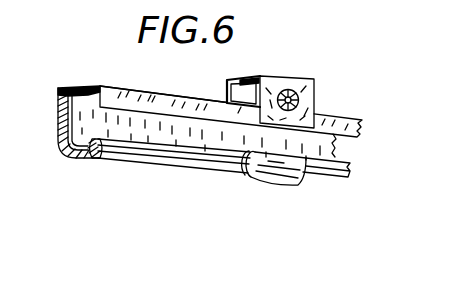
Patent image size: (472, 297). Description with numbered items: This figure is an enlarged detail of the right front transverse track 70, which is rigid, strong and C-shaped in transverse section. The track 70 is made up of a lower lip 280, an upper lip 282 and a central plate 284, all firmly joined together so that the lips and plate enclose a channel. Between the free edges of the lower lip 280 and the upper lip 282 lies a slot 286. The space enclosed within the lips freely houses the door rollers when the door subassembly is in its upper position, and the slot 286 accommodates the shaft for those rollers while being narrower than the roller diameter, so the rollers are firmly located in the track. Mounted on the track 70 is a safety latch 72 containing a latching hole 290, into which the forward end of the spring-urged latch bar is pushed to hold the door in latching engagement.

The right front transverse track 70 is at (117, 80).
The safety latch 72 is at (276, 83).
The lower lip 280 is at (127, 162).
The upper lip 282 is at (175, 107).
The central plate 284 is at (60, 115).
The slot 286 is at (200, 141).
The latching hole 290 is at (291, 83).